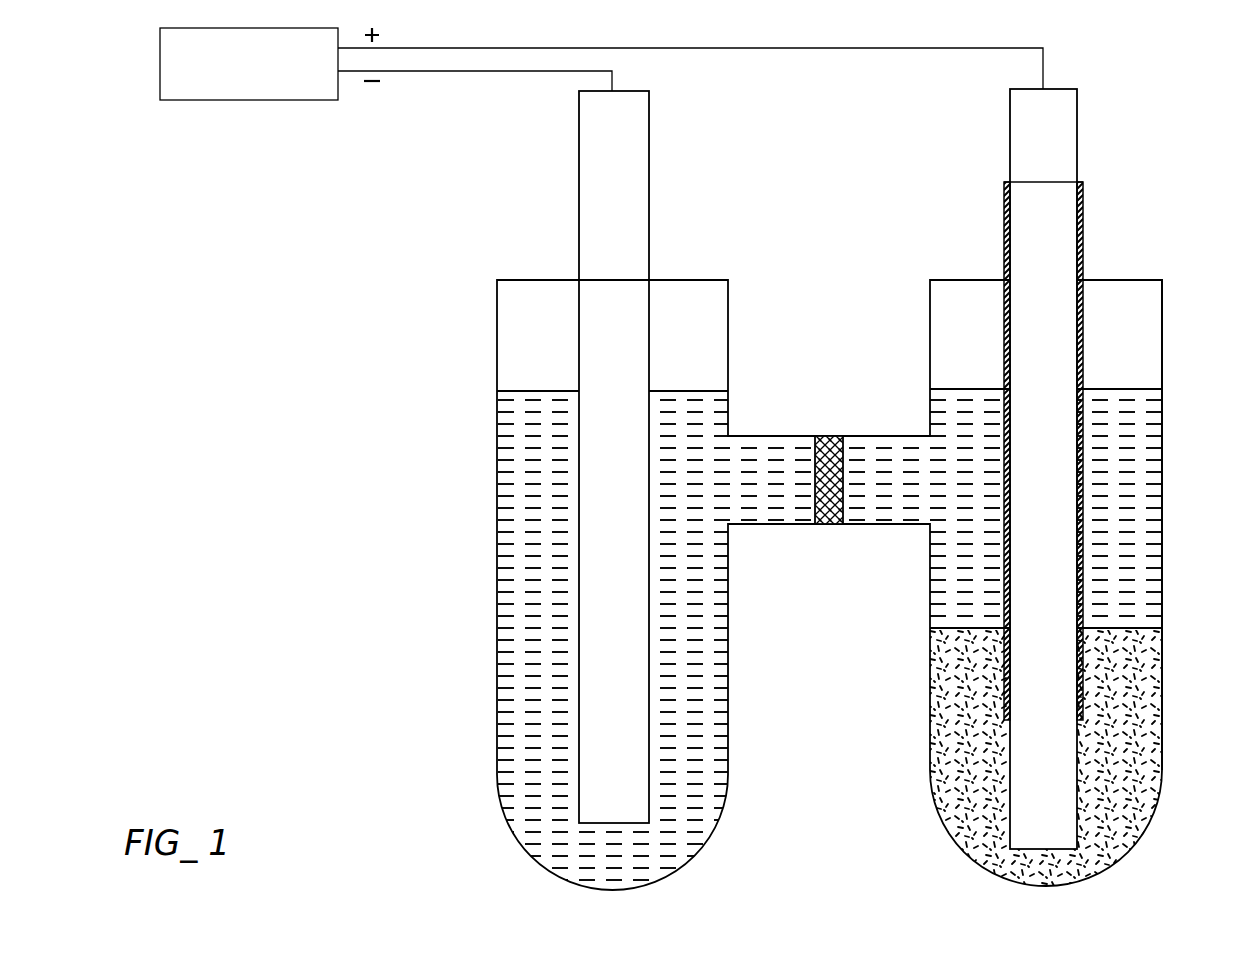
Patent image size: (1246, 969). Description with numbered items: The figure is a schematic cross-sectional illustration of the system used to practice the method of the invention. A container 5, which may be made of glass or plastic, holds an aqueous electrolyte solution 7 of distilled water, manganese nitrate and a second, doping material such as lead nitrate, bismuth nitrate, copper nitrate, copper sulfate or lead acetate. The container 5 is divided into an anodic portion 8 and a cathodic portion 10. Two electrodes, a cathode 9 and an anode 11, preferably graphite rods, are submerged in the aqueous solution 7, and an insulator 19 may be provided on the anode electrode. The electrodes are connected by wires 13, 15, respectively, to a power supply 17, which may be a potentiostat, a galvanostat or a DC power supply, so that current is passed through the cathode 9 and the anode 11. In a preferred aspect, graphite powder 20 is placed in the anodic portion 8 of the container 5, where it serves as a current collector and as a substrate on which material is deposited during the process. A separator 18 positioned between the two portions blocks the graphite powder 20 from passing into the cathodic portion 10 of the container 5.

The container 5 is at (736, 329).
The aqueous electrolyte solution 7 is at (1146, 513).
The anodic portion 8 is at (1162, 357).
The cathode 9 is at (649, 130).
The cathodic portion 10 is at (497, 347).
The anode 11 is at (1077, 123).
The wire 13 is at (446, 73).
The wire 15 is at (485, 48).
The power supply 17 is at (160, 75).
The separator 18 is at (825, 525).
The insulator 19 is at (1083, 212).
The graphite powder 20 is at (1140, 712).